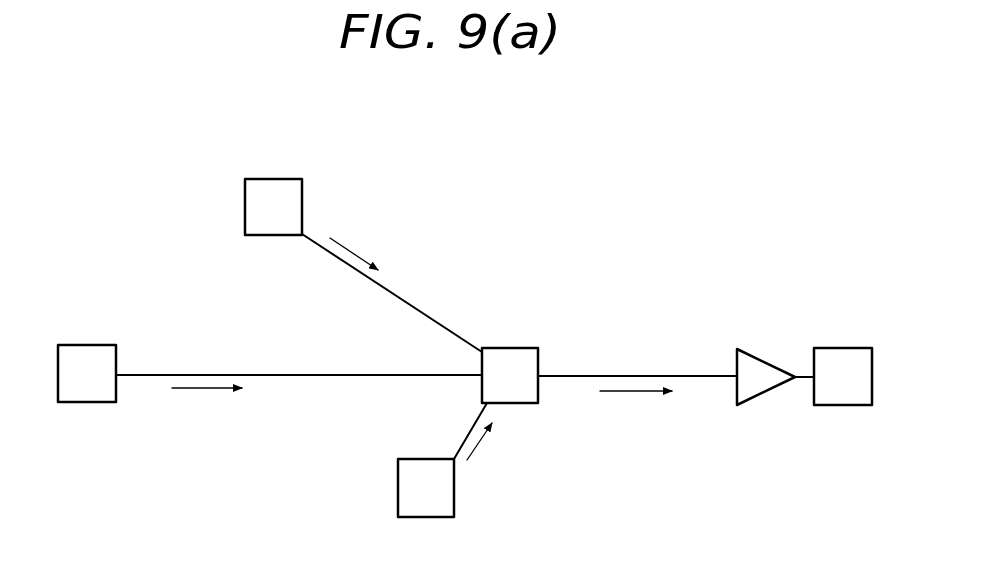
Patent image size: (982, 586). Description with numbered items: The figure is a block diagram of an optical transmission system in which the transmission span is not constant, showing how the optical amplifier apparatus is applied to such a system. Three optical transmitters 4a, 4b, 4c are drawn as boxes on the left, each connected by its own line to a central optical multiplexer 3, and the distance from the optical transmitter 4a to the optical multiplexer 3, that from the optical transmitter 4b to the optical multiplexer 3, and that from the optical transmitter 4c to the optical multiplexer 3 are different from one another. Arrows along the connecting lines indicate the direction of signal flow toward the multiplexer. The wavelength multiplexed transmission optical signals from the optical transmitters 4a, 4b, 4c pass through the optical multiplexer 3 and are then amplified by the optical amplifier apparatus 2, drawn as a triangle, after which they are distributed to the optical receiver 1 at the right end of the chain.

The optical receiver 1 is at (845, 348).
The optical amplifier apparatus 2 is at (762, 358).
The optical multiplexer 3 is at (520, 348).
The optical transmitter 4a is at (278, 179).
The optical transmitter 4b is at (96, 345).
The optical transmitter 4c is at (398, 496).